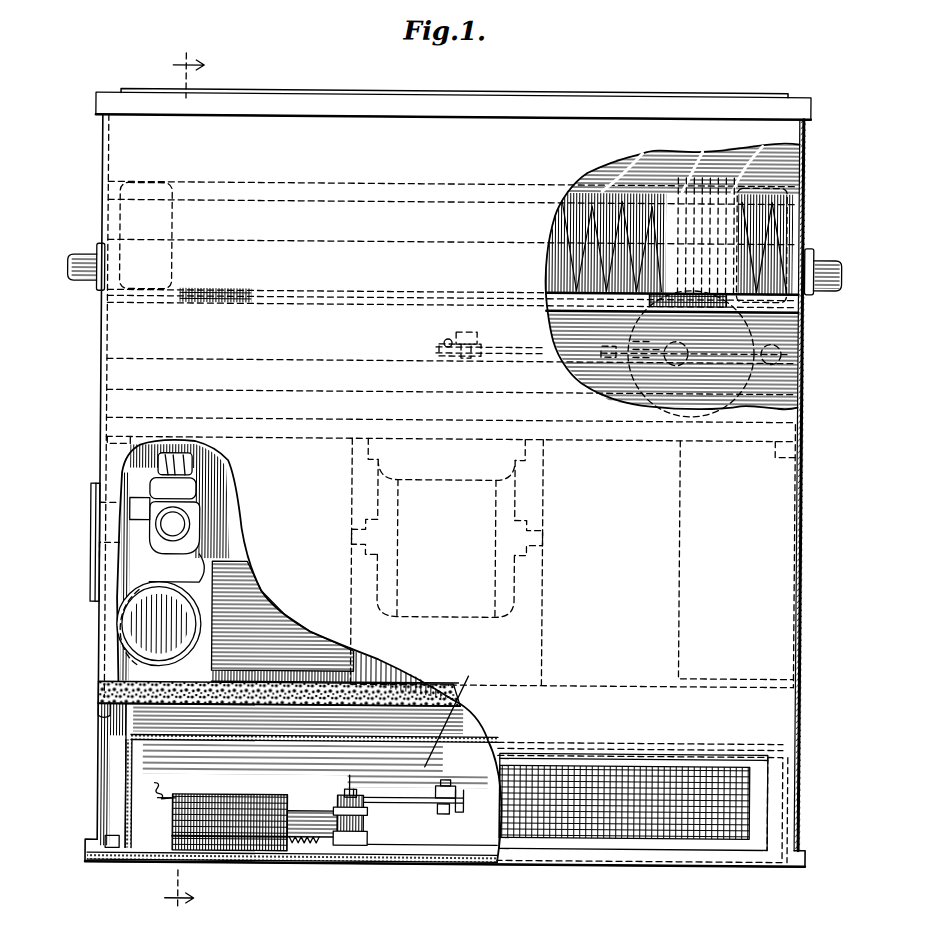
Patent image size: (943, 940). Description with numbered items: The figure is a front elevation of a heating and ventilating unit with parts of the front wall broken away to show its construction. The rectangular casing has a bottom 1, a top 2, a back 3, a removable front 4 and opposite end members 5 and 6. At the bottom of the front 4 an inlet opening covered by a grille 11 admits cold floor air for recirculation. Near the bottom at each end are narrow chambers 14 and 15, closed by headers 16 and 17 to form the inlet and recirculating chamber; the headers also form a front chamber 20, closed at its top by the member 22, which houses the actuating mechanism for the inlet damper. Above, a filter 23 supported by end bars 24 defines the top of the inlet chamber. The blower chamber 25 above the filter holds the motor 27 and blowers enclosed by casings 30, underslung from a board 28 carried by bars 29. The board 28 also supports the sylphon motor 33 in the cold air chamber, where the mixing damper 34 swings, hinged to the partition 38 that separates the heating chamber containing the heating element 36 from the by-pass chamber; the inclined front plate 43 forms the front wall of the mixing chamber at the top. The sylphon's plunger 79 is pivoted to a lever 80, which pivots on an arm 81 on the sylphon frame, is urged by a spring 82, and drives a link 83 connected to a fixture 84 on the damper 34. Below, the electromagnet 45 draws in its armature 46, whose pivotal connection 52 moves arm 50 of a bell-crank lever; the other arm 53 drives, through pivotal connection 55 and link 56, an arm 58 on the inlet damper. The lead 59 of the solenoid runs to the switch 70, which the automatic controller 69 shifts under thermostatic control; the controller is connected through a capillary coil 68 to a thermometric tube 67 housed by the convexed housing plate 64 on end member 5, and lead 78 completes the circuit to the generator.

The bottom 1 is at (468, 862).
The top 2 is at (548, 96).
The back 3 is at (184, 482).
The front 4 is at (778, 497).
The end member 5 is at (94, 778).
The end member 6 is at (808, 586).
The grille 11 is at (660, 828).
The narrow chamber 14 is at (106, 798).
The narrow chamber 15 is at (785, 796).
The header 16 is at (130, 762).
The header 17 is at (770, 749).
The front chamber 20 is at (456, 710).
The member 22 is at (470, 741).
The filter 23 is at (110, 690).
The end bar 24 is at (100, 718).
The blower chamber 25 is at (388, 673).
The motor 27 is at (512, 582).
The board 28 is at (336, 424).
The bar 29 is at (150, 432).
The casing 30 is at (682, 568).
The sylphon motor 33 is at (646, 410).
The mixing damper 34 is at (228, 292).
The heating element 36 is at (175, 186).
The partition 38 is at (785, 196).
The front plate 43 is at (786, 153).
The electromagnet 45 is at (206, 802).
The armature 46 is at (326, 826).
The arm 50 is at (372, 812).
The pivotal connection 52 is at (353, 790).
The arm 53 is at (401, 798).
The pivotal connection 55 is at (447, 814).
The link 56 is at (463, 806).
The arm 58 is at (458, 787).
The lead 59 is at (196, 473).
The convexed housing plate 64 is at (94, 494).
The thermometric tube 67 is at (95, 562).
The capillary coil 68 is at (126, 593).
The automatic controller 69 is at (200, 526).
The switch 70 is at (197, 490).
The lead 78 is at (170, 468).
The plunger 79 is at (700, 415).
The lever 80 is at (540, 354).
The arm 81 is at (606, 382).
The spring 82 is at (790, 352).
The link 83 is at (444, 344).
The fixture 84 is at (478, 340).